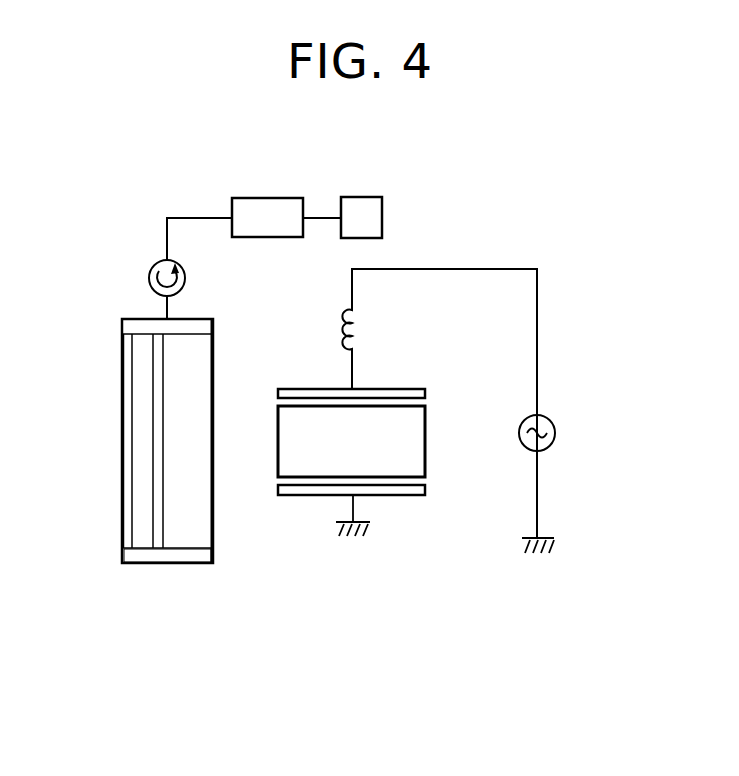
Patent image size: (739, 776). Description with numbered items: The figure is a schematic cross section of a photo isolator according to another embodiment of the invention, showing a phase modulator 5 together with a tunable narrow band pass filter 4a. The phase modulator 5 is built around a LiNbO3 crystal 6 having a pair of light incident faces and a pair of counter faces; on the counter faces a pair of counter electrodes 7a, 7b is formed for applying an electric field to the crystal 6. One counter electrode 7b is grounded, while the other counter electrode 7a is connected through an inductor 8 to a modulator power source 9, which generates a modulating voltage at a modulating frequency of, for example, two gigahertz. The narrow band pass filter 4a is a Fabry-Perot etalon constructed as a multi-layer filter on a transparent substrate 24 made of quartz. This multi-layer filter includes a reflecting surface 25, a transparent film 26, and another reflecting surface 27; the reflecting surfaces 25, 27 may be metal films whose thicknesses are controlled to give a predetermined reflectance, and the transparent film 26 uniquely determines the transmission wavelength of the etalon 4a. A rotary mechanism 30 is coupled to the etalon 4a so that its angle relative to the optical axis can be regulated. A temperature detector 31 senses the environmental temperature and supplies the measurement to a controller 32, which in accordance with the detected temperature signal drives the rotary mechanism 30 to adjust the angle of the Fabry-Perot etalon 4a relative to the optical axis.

The narrow band pass filter 4a is at (165, 469).
The phase modulator 5 is at (518, 265).
The LiNbO3 crystal 6 is at (420, 421).
The counter electrode 7a is at (413, 389).
The counter electrode 7b is at (410, 496).
The inductor 8 is at (345, 315).
The modulator power source 9 is at (552, 441).
The transparent substrate 24 is at (183, 540).
The reflecting surface 25 is at (155, 464).
The transparent film 26 is at (137, 425).
The reflecting surface 27 is at (122, 381).
The rotary mechanism 30 is at (150, 274).
The temperature detector 31 is at (382, 212).
The controller 32 is at (275, 198).